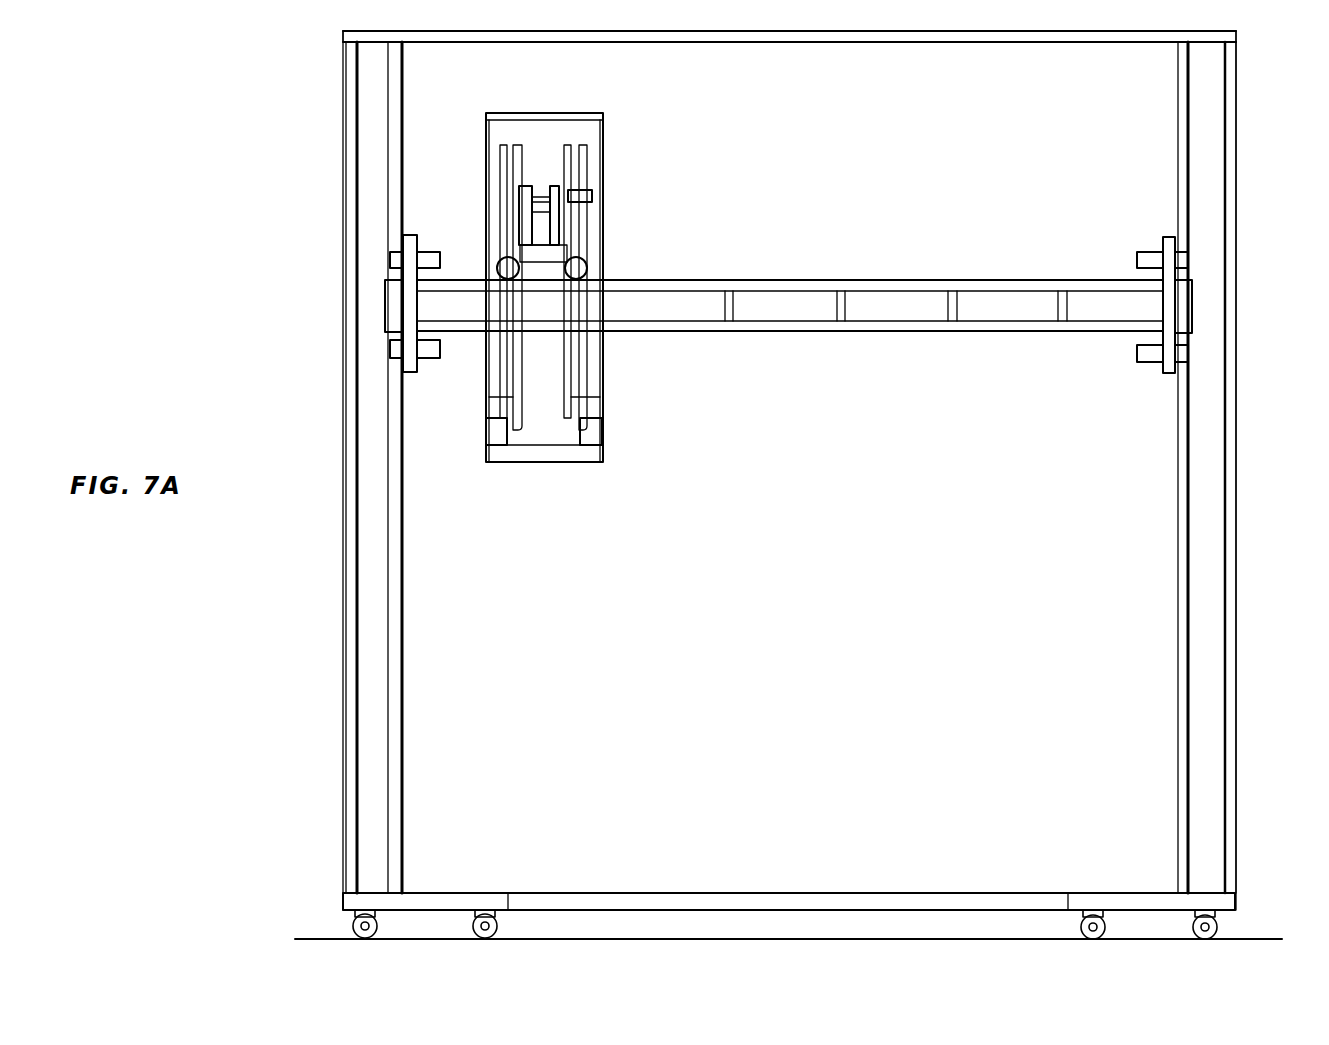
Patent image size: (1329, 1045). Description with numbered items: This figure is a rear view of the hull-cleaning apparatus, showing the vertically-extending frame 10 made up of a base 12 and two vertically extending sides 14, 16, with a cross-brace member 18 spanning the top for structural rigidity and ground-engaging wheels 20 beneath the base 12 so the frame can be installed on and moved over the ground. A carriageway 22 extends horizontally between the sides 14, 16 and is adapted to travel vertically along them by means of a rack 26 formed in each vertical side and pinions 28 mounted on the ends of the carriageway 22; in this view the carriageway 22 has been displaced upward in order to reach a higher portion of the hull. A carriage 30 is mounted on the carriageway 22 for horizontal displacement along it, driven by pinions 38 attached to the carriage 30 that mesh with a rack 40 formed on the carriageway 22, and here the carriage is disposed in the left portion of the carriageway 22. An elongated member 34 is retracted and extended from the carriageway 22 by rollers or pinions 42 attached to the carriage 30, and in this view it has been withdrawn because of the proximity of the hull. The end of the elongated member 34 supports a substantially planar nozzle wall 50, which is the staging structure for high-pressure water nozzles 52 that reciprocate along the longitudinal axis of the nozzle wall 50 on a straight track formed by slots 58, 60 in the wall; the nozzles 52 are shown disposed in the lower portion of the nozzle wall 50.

The frame 10 is at (278, 99).
The base 12 is at (875, 893).
The side 14 is at (345, 530).
The side 16 is at (1236, 530).
The cross-brace member 18 is at (843, 43).
The ground-engaging wheel 20 is at (358, 920).
The carriageway 22 is at (840, 322).
The rack 26 is at (403, 565).
The pinion 28 is at (390, 258).
The carriage 30 is at (554, 257).
The elongated member 34 is at (553, 228).
The pinion 38 is at (503, 262).
The rack 40 is at (801, 280).
The roller or pinion 42 is at (541, 195).
The nozzle wall 50 is at (604, 148).
The high-pressure water nozzle 52 is at (622, 432).
The slot 58 is at (571, 374).
The slot 60 is at (516, 385).